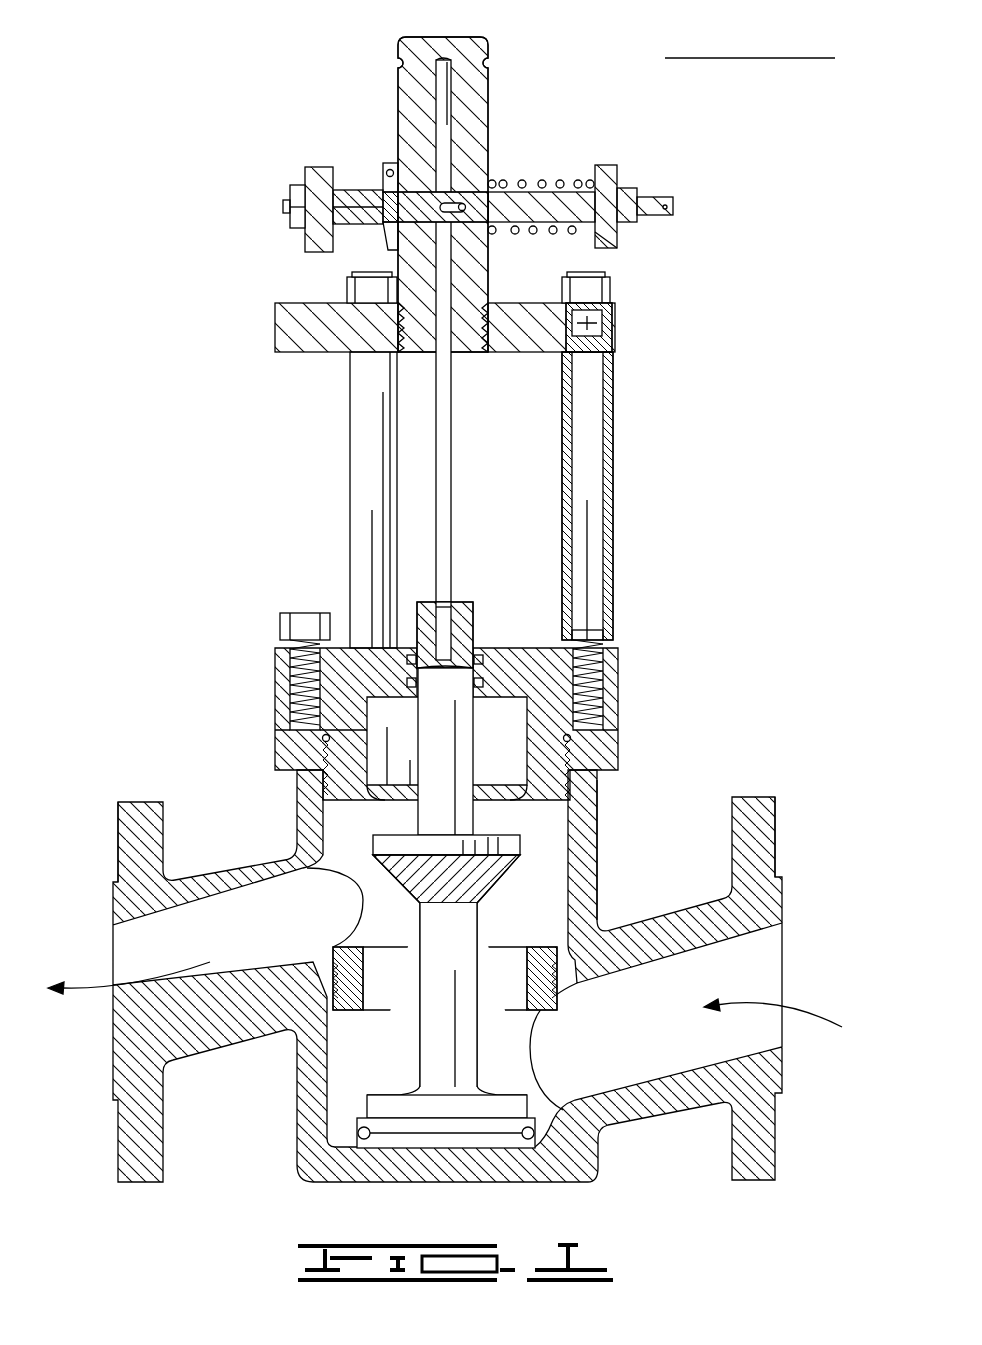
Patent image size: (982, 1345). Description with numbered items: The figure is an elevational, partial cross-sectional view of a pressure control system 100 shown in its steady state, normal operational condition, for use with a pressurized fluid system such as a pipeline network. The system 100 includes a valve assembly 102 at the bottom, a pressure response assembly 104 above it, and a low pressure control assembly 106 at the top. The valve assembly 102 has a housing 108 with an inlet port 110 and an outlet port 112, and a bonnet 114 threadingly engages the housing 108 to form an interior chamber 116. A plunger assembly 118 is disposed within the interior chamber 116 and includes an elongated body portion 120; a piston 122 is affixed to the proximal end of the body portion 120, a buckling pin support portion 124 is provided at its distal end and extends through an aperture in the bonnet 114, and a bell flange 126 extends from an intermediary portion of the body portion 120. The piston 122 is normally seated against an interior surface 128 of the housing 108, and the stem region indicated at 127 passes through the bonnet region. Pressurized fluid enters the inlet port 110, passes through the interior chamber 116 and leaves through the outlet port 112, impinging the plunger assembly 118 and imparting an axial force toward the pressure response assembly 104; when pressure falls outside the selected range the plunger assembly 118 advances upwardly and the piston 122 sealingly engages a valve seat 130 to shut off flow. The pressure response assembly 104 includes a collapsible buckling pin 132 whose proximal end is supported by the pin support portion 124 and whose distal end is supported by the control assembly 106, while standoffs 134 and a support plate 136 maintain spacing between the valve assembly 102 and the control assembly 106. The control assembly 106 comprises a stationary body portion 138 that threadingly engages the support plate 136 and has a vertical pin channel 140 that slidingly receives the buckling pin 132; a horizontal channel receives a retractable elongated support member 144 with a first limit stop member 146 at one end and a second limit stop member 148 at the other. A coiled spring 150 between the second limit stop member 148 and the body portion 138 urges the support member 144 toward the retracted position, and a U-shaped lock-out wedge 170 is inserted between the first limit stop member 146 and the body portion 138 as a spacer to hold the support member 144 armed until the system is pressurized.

The pressure control system 100 is at (230, 70).
The valve assembly 102 is at (204, 735).
The pressure response assembly 104 is at (194, 442).
The low pressure control assembly 106 is at (198, 194).
The housing 108 is at (598, 868).
The inlet port 110 is at (775, 923).
The outlet port 112 is at (145, 922).
The bonnet 114 is at (540, 655).
The interior chamber 116 is at (344, 846).
The plunger assembly 118 is at (461, 930).
The elongated body portion 120 is at (478, 818).
The piston 122 is at (400, 1090).
The buckling pin support portion 124 is at (473, 612).
The bell flange 126 is at (415, 875).
The stem bore 127 is at (456, 722).
The interior surface 128 is at (345, 1145).
The valve seat 130 is at (322, 942).
The collapsible buckling pin 132 is at (450, 430).
The standoffs 134 is at (360, 445).
The support plate 136 is at (275, 325).
The stationary body portion 138 is at (398, 45).
The pin channel 140 is at (445, 103).
The retractable elongated support member 144 is at (569, 200).
The first limit stop member 146 is at (318, 170).
The second limit stop member 148 is at (617, 248).
The coiled spring 150 is at (521, 182).
The U-shaped lock-out wedge 170 is at (383, 163).